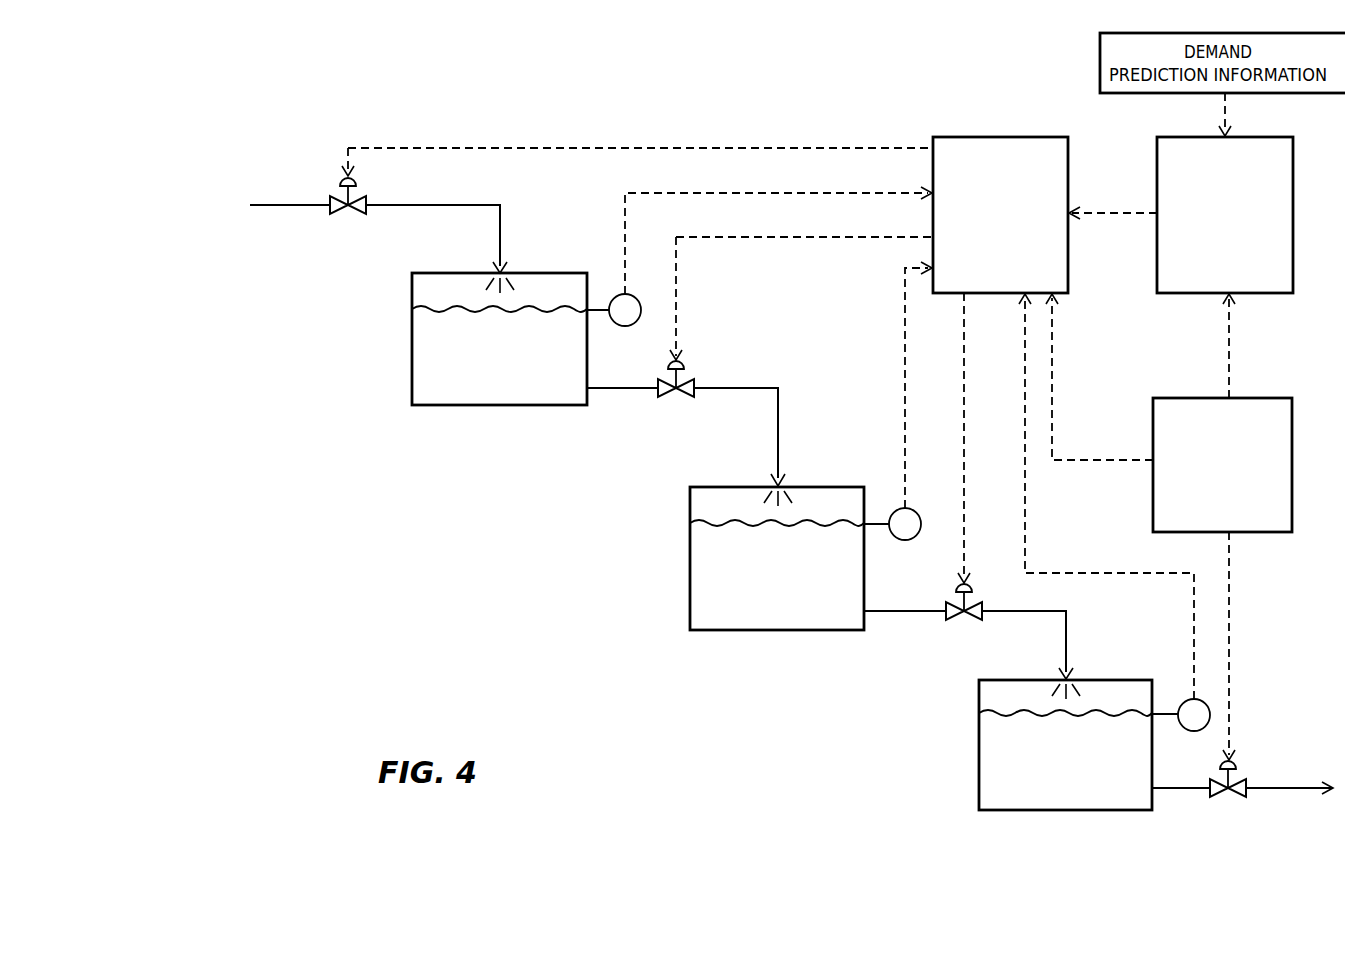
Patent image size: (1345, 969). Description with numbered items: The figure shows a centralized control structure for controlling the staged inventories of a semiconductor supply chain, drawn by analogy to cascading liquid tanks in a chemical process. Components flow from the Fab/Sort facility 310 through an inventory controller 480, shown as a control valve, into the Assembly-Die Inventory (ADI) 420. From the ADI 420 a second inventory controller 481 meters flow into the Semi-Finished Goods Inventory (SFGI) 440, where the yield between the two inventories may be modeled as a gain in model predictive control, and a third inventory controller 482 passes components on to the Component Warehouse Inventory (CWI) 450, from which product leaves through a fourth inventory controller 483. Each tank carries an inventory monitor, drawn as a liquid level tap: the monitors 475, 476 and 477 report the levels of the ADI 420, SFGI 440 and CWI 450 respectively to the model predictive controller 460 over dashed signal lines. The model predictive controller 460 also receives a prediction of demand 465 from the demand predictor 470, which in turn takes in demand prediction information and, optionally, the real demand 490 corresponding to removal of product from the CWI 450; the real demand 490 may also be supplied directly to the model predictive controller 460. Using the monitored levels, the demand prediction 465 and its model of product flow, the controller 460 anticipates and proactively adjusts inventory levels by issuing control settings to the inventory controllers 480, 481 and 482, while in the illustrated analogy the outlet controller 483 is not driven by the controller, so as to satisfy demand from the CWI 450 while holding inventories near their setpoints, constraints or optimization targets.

The Fab/Sort (F/S) facility 310 is at (254, 210).
The Assembly-Die Inventory (ADI) 420 is at (482, 389).
The Semi-Finished Goods Inventory (SFGI) 440 is at (759, 602).
The Component Warehouse Inventory (CWI) 450 is at (1047, 791).
The model predictive controller 460 is at (982, 269).
The prediction of demand 465 is at (1123, 212).
The demand predictor 470 is at (1207, 270).
The inventory monitor 475 is at (632, 327).
The inventory monitor 476 is at (906, 541).
The inventory monitor 477 is at (1197, 732).
The inventory controller 480 is at (383, 181).
The inventory controller 481 is at (688, 366).
The inventory controller 482 is at (954, 590).
The inventory controller 483 is at (1240, 768).
The real demand 490 is at (1204, 508).